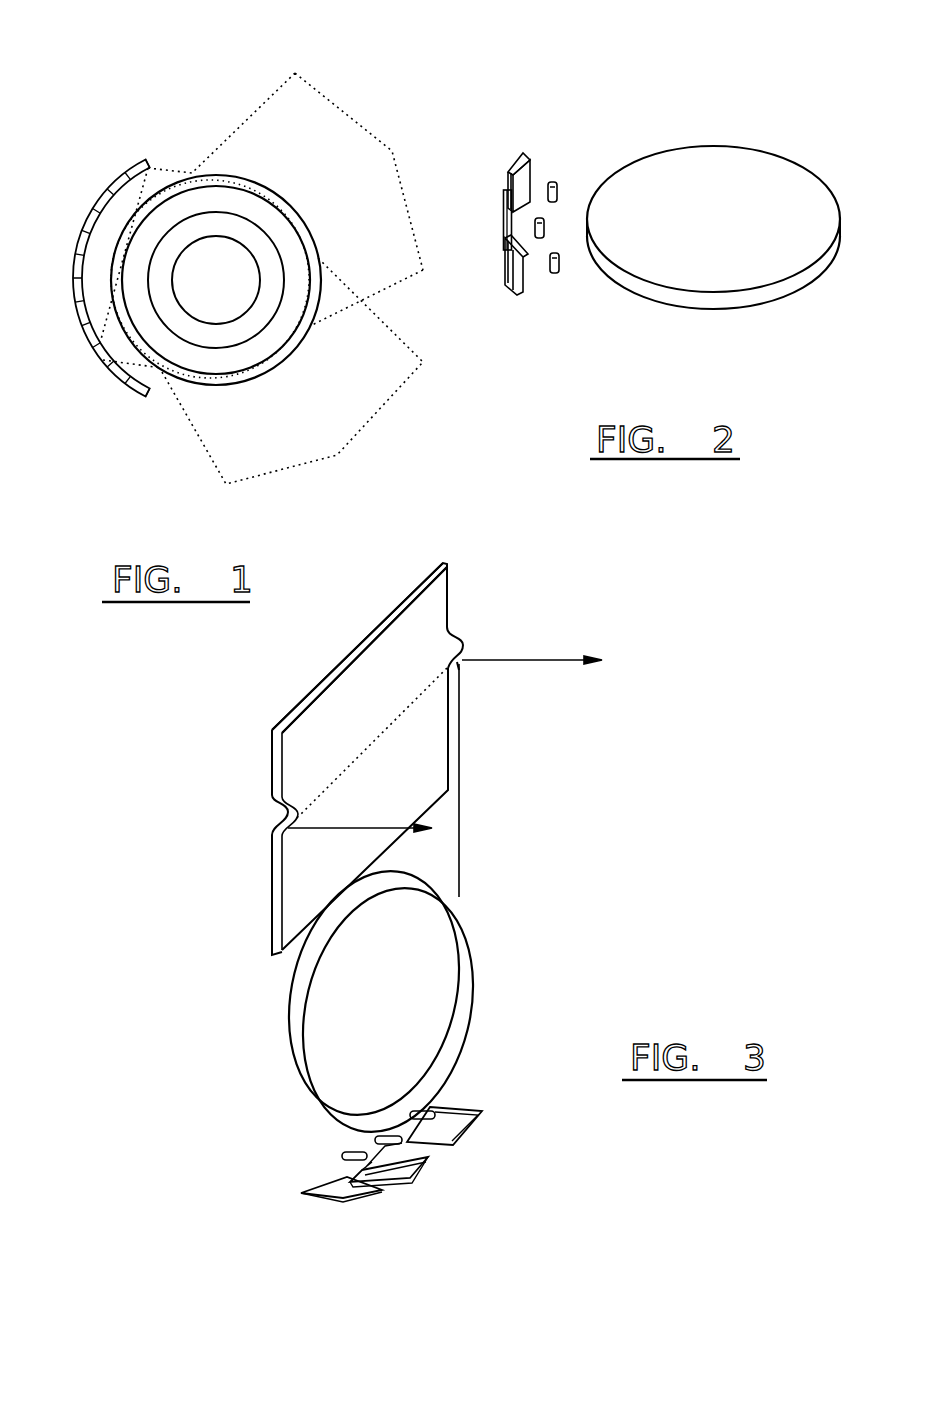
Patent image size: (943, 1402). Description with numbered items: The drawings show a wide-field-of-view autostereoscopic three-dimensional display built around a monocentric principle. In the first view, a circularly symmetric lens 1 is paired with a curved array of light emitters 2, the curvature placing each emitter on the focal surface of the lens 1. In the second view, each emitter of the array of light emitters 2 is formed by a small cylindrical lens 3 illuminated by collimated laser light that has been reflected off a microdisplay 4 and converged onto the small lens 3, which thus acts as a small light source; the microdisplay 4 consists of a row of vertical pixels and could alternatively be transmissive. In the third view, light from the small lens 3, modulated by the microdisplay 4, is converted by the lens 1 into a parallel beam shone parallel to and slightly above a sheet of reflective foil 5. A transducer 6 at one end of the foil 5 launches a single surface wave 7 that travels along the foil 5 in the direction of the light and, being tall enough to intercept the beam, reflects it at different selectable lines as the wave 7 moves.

In FIG. 1, the circularly symmetric lens 1 is at (277, 190).
In FIG. 2, the circularly symmetric lens 1 is at (747, 190).
In FIG. 3, the circularly symmetric lens 1 is at (478, 941).
In FIG. 1, the array of light emitters 2 is at (107, 375).
In FIG. 2, the small cylindrical lens 3 is at (558, 272).
In FIG. 3, the small cylindrical lens 3 is at (342, 1155).
In FIG. 2, the microdisplay 4 is at (527, 175).
In FIG. 3, the microdisplay 4 is at (342, 1192).
In FIG. 3, the sheet of reflective foil 5 is at (448, 606).
In FIG. 3, the transducer 6 is at (443, 563).
In FIG. 3, the surface wave 7 is at (467, 645).